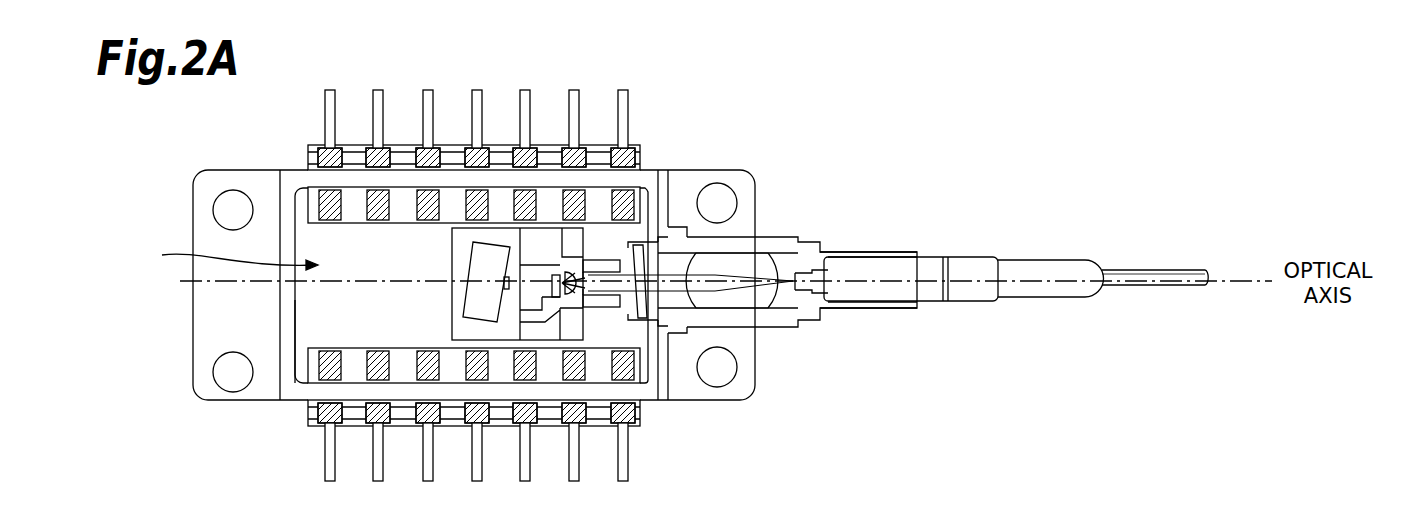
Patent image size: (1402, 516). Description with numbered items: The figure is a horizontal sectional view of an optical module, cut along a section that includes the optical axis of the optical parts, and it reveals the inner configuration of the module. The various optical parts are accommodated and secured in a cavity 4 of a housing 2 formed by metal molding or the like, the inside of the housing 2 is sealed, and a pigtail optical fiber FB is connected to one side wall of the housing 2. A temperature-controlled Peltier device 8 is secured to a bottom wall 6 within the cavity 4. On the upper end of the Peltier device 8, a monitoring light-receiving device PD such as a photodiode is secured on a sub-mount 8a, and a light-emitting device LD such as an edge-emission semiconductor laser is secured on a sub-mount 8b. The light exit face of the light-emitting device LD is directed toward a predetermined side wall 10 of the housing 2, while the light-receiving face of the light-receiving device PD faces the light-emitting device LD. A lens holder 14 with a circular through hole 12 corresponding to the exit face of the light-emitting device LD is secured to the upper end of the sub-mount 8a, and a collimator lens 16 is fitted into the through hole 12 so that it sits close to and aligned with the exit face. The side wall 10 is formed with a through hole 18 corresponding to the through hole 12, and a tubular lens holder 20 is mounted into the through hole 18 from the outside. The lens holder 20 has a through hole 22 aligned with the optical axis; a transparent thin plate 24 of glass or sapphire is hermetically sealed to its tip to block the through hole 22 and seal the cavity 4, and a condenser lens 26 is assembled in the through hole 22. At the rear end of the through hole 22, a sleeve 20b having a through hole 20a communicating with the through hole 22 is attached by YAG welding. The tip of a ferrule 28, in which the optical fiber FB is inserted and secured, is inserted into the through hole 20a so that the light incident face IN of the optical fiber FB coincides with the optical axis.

The housing 2 is at (292, 165).
The cavity 4 is at (230, 255).
The bottom wall 6 is at (308, 342).
The Peltier device 8 is at (458, 282).
The sub-mount 8a is at (455, 258).
The sub-mount 8b is at (542, 270).
The side wall 10 is at (650, 178).
The through hole 12 is at (596, 300).
The lens holder 14 is at (612, 302).
The collimator lens 16 is at (580, 266).
The through hole 18 is at (667, 313).
The tubular lens holder 20 is at (787, 323).
The through hole 20a is at (852, 262).
The sleeve 20b is at (893, 252).
The through hole 22 is at (740, 305).
The transparent thin plate 24 is at (645, 268).
The condenser lens 26 is at (760, 262).
The ferrule 28 is at (928, 262).
The optical fiber FB is at (1060, 262).
The light-emitting device LD is at (557, 298).
The light-receiving device PD is at (460, 300).
The light incident face IN is at (797, 294).